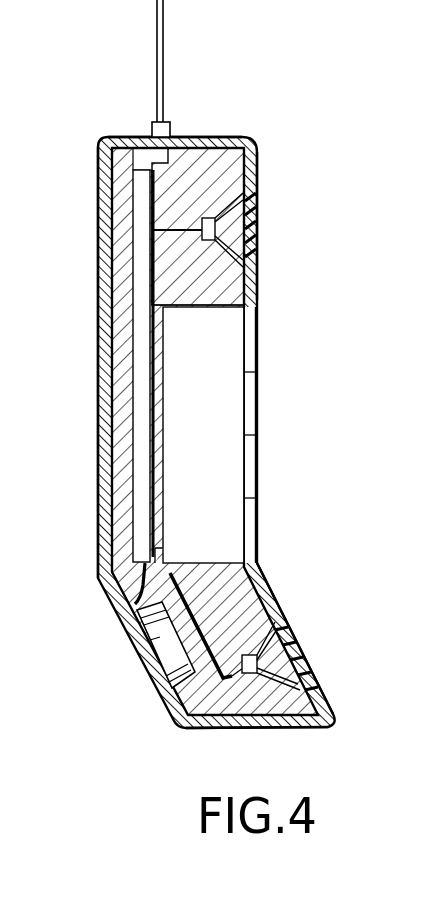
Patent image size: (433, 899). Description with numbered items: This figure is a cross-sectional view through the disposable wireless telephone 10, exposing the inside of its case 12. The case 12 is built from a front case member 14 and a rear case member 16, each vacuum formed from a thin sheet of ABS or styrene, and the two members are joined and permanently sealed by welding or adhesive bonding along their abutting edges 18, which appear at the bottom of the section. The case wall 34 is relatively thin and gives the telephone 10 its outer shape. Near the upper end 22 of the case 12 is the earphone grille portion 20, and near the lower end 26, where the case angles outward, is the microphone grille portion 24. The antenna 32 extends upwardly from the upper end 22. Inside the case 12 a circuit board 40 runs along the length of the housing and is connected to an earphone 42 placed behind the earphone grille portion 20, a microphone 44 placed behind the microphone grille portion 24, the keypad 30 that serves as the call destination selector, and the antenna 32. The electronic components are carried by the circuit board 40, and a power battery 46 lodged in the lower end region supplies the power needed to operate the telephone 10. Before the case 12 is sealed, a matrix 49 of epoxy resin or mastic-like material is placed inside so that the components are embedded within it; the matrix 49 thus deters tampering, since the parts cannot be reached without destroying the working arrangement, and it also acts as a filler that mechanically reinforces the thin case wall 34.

The disposable wireless telephone 10 is at (97, 142).
The case 12 is at (104, 289).
The front case member 14 is at (258, 163).
The rear case member 16 is at (99, 213).
The abutting edges 18 is at (258, 728).
The earphone grille portion 20 is at (255, 251).
The upper end 22 is at (199, 137).
The microphone grille portion 24 is at (278, 626).
The lower end 26 is at (288, 730).
The keypad 30 is at (252, 398).
The antenna 32 is at (165, 26).
The case wall 34 is at (100, 385).
The circuit board 40 is at (140, 257).
The earphone 42 is at (245, 216).
The microphone 44 is at (262, 669).
The power battery 46 is at (160, 641).
The matrix 49 is at (213, 148).